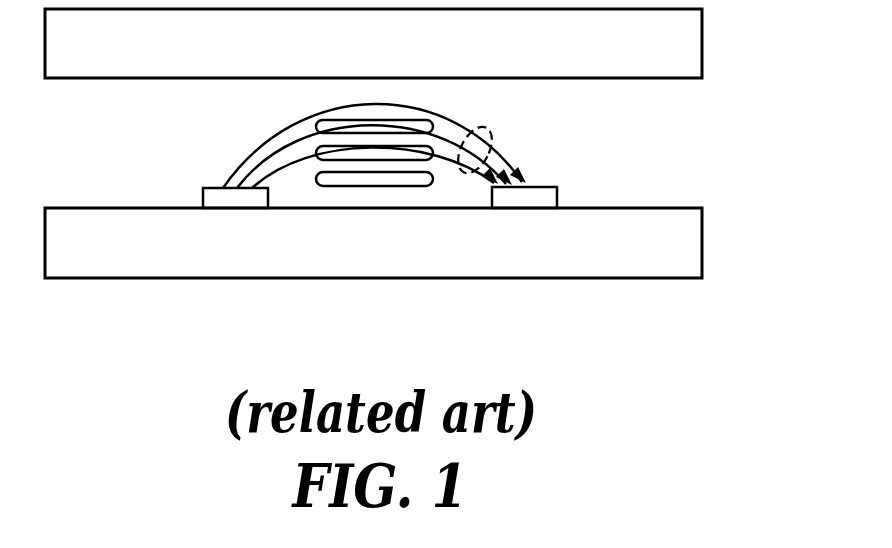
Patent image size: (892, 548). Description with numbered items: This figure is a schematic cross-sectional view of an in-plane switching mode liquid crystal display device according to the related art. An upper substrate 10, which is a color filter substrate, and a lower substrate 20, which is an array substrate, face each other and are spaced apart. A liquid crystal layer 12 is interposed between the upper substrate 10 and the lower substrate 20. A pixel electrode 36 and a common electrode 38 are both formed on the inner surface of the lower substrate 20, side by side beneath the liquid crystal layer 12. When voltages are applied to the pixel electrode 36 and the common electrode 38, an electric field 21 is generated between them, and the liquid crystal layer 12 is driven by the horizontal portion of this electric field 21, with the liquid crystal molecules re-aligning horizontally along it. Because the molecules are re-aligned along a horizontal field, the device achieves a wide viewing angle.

The upper substrate 10 is at (733, 3).
The liquid crystal layer 12 is at (733, 78).
The lower substrate 20 is at (733, 200).
The pixel electrode 36 is at (232, 200).
The common electrode 38 is at (535, 200).
The electric field 21 is at (462, 172).